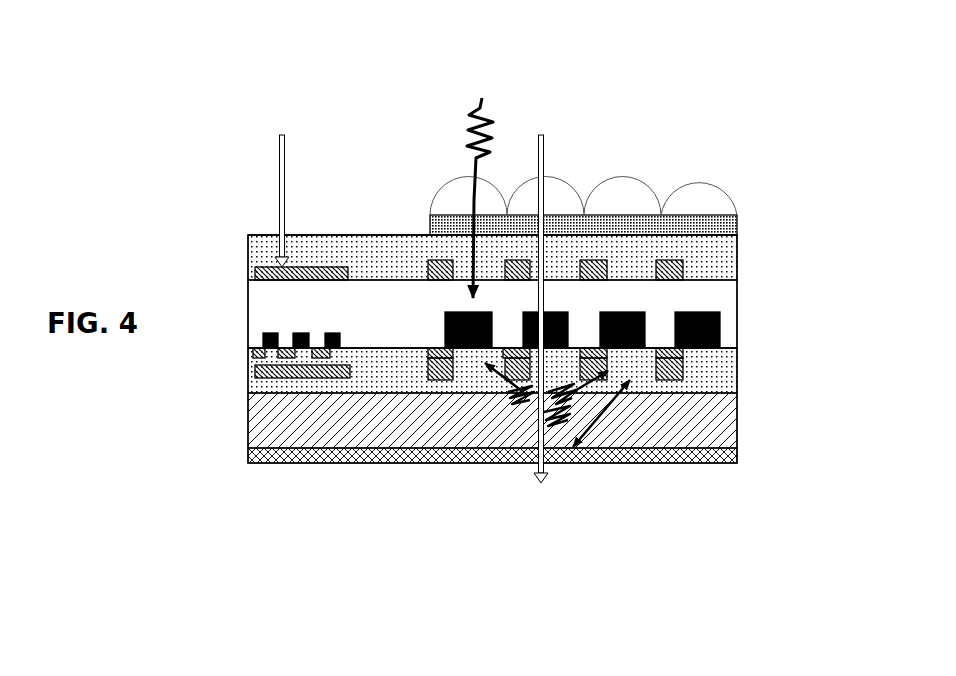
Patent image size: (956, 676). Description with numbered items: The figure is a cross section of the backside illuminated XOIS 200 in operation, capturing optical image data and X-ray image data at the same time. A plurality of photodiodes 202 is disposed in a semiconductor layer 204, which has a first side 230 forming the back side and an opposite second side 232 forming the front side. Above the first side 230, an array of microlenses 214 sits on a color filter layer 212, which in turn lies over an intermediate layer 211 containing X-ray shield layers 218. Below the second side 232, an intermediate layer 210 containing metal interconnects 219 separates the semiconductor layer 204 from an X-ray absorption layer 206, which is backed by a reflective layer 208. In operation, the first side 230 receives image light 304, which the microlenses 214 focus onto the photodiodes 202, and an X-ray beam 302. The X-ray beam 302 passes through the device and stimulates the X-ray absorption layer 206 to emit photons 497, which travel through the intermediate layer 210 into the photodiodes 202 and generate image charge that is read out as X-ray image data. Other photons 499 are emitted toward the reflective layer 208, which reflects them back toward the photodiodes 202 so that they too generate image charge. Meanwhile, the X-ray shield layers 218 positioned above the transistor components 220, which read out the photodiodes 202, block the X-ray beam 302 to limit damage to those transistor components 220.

The XOIS device 200 is at (166, 230).
The photodiodes 202 is at (710, 337).
The semiconductor layer 204 is at (713, 293).
The X-ray absorption layer 206 is at (265, 428).
The reflective layer 208 is at (675, 455).
The intermediate layer 210 is at (713, 370).
The intermediate layer 211 is at (713, 255).
The color filter layer 212 is at (738, 216).
The microlenses 214 is at (432, 178).
The X-ray shield layers 218 is at (258, 274).
The metal interconnects 219 is at (258, 371).
The transistor components 220 is at (262, 341).
The first side 230 is at (380, 266).
The second side 232 is at (357, 362).
The X-ray beam 302 is at (411, 296).
The image light 304 is at (483, 173).
The photons 497 is at (512, 394).
The photons 499 is at (550, 425).